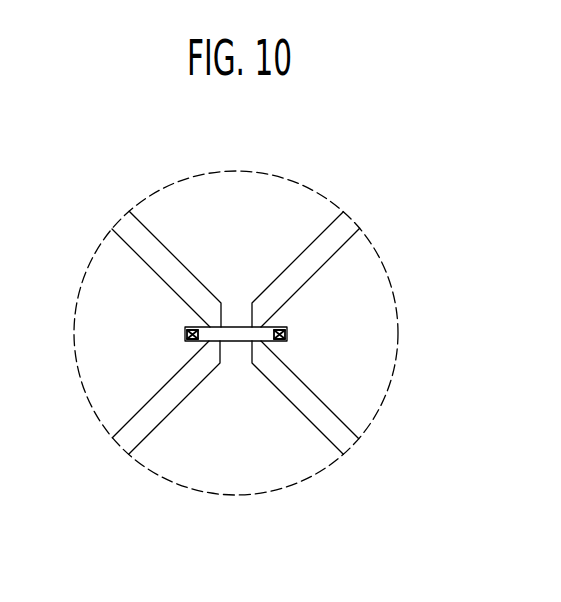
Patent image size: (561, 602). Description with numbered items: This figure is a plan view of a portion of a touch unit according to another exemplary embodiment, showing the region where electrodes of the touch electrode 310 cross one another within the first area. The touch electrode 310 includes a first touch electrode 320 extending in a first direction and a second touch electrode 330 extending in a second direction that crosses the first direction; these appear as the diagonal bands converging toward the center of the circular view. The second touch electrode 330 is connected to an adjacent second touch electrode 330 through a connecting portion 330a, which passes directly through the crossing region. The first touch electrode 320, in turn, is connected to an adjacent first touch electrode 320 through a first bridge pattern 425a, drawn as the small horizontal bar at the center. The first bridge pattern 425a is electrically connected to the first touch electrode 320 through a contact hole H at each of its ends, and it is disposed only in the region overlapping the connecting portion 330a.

The touch electrode 310 is at (460, 166).
The first touch electrode 320 is at (373, 263).
The second touch electrode 330 is at (283, 358).
The connecting portion 330a is at (228, 356).
The first bridge pattern 425a is at (245, 341).
The contact hole H is at (185, 333).